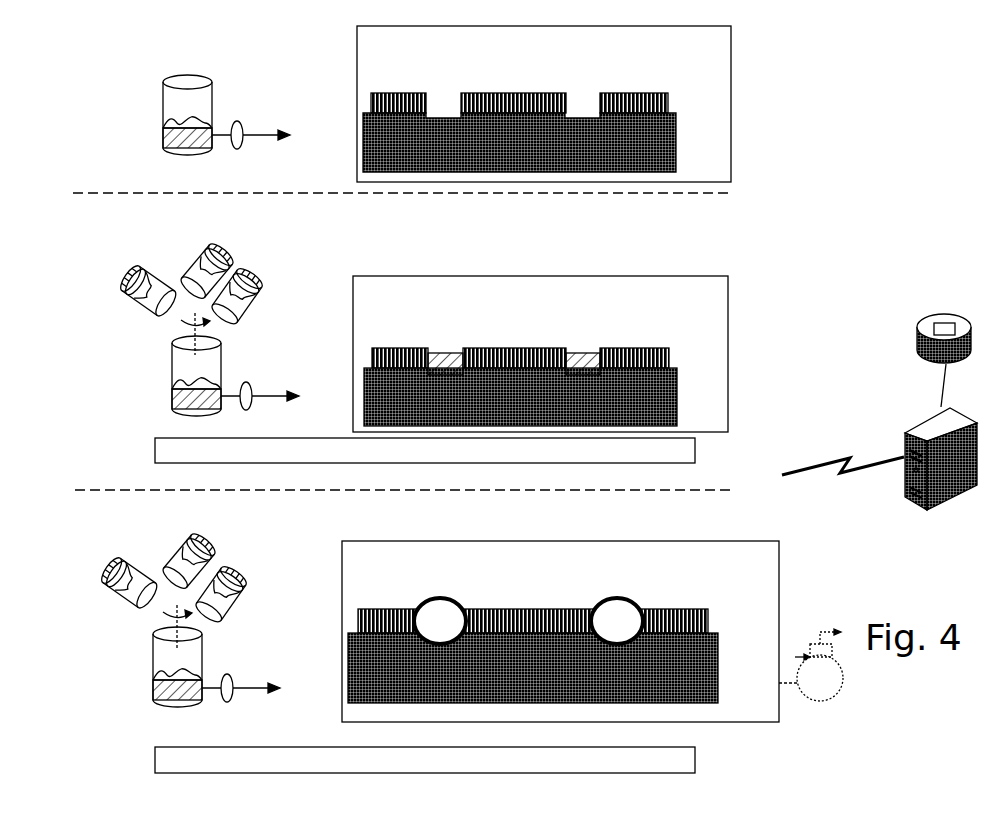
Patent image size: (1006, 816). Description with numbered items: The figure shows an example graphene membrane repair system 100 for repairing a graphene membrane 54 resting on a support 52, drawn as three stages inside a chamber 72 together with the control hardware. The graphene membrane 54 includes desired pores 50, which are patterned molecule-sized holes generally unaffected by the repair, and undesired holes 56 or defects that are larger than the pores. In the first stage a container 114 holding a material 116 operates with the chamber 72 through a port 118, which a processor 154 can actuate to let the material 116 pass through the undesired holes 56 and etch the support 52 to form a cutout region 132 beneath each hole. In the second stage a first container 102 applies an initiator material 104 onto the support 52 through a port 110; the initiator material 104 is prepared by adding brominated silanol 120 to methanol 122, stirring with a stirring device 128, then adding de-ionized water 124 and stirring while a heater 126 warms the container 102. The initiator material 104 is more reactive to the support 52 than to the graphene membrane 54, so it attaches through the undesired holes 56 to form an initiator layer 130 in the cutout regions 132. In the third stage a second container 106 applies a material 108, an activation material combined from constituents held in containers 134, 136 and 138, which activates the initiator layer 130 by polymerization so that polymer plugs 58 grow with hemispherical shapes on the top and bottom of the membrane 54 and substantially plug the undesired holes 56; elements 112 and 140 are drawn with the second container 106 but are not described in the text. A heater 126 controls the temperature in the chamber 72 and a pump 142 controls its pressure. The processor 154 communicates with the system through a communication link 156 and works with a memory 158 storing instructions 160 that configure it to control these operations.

The graphene membrane repair system 100 is at (858, 138).
The desired pores 50 is at (515, 96).
The support 52 is at (677, 136).
The graphene membrane 54 is at (668, 106).
The undesired holes 56 is at (445, 97).
The polymer plugs 58 is at (462, 609).
The chamber 72 is at (731, 100).
The first container 102 is at (176, 352).
The initiator material 104 is at (172, 383).
The second container 106 is at (158, 648).
The activation material 108 is at (153, 676).
The port 110 is at (244, 393).
The third optical element 112 is at (226, 688).
The container 114 is at (185, 78).
The material 116 is at (165, 122).
The port 118 is at (235, 123).
The brominated silanol 120 is at (148, 276).
The methanol 122 is at (229, 258).
The de-ionized water 124 is at (252, 306).
The heater 126 is at (162, 431).
The stirring device 128 is at (188, 328).
The initiator layer 130 is at (431, 356).
The cutout region 132 is at (438, 110).
The container 134 is at (129, 571).
The container 136 is at (210, 550).
The container 138 is at (233, 600).
The rotation 140 is at (170, 620).
The pump 142 is at (815, 700).
The processor 154 is at (915, 509).
The communication link 156 is at (843, 470).
The memory 158 is at (928, 368).
The instructions 160 is at (930, 318).